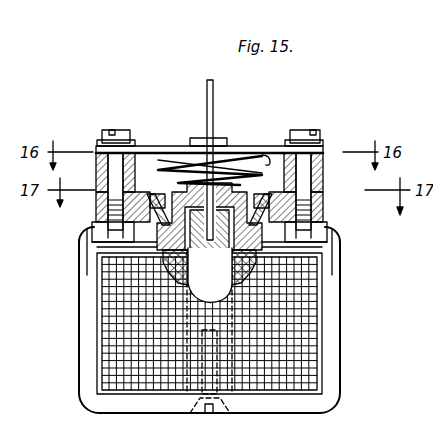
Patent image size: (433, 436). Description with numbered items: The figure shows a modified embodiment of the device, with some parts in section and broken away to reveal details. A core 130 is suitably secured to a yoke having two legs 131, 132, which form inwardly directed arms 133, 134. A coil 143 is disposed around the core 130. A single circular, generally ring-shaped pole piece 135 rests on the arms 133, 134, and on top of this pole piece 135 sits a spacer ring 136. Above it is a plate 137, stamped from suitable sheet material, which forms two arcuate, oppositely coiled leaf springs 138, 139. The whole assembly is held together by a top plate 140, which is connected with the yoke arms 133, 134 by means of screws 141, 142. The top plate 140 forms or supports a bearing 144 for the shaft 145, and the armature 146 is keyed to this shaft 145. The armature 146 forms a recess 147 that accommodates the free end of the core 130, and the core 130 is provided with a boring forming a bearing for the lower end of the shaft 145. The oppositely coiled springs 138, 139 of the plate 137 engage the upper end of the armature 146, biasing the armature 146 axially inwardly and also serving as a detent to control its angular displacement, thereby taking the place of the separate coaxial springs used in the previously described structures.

The core 130 is at (204, 283).
The yoke leg 131 is at (85, 320).
The yoke leg 132 is at (333, 312).
The inwardly directed arm 133 is at (98, 228).
The inwardly directed arm 134 is at (318, 232).
The pole piece 135 is at (322, 212).
The spacer ring 136 is at (318, 187).
The plate 137 is at (94, 144).
The leaf spring 138 is at (250, 168).
The leaf spring 139 is at (160, 168).
The top plate 140 is at (173, 146).
The screw 141 is at (110, 130).
The screw 142 is at (320, 132).
The coil 143 is at (300, 348).
The bearing 144 is at (216, 138).
The shaft 145 is at (207, 92).
The armature 146 is at (320, 248).
The recess 147 is at (100, 248).